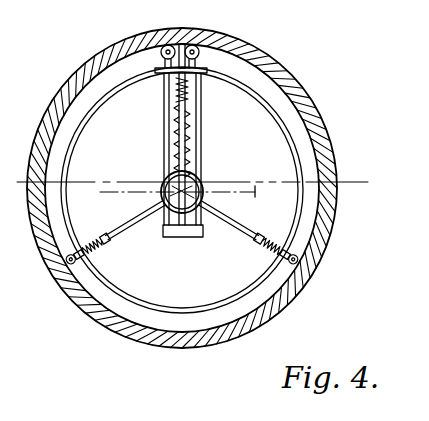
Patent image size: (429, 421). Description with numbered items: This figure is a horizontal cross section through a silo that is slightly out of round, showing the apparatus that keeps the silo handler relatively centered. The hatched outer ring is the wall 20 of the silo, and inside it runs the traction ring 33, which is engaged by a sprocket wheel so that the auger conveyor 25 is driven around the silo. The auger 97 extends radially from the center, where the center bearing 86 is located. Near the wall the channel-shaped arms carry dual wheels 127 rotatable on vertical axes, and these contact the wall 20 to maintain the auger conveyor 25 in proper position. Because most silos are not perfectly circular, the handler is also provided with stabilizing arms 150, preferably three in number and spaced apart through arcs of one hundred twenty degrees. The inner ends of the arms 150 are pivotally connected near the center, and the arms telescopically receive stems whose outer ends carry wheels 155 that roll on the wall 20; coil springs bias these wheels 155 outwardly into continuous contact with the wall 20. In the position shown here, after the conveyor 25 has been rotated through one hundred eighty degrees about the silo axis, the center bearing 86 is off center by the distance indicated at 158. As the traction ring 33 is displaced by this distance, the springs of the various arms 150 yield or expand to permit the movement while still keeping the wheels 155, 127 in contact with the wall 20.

The wall 20 is at (77, 87).
The traction ring 33 is at (282, 136).
The auger conveyor 25 is at (177, 124).
The auger 97 is at (189, 147).
The dual wheels 127 is at (167, 44).
The center bearing 86 is at (203, 183).
The stabilizing arms 150 is at (178, 127).
The wheels 155 is at (80, 266).
The off-center distance 158 is at (256, 187).